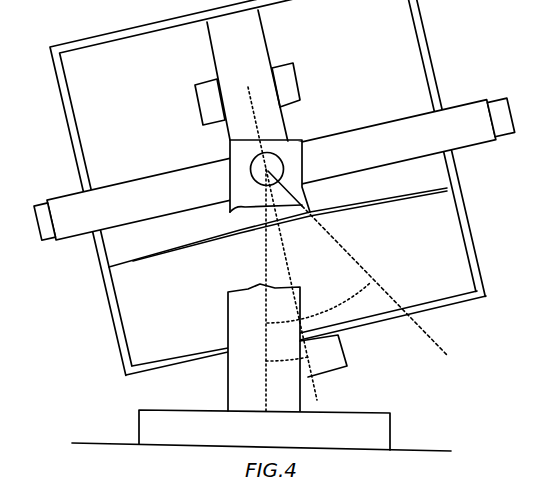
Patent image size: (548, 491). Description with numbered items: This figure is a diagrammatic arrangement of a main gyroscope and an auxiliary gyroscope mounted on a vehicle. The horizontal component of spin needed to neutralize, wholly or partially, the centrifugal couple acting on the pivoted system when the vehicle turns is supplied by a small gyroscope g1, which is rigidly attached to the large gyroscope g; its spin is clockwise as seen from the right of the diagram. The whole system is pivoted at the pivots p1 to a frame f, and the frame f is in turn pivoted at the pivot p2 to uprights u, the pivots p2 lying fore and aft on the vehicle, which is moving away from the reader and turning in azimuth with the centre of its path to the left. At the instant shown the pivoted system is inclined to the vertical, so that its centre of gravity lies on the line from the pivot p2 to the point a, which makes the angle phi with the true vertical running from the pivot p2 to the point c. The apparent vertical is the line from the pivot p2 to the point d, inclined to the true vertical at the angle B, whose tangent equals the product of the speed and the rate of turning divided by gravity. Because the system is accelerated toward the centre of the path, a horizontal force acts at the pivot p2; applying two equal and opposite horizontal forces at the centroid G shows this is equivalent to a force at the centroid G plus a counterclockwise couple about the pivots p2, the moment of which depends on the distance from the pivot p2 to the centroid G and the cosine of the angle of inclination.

The small gyroscope g1 is at (247, 76).
The large gyroscope g is at (278, 254).
The frame f is at (271, 170).
The pivots of the system p1 is at (40, 205).
The pivot of the frame p2 is at (267, 169).
The uprights u is at (287, 276).
The true vertical reference point c is at (261, 430).
The centroid of the pivoted system G is at (281, 237).
The centre-of-gravity line reference point a is at (297, 290).
The apparent vertical reference point d is at (366, 266).
The angle β between apparent and true vertical B is at (318, 303).